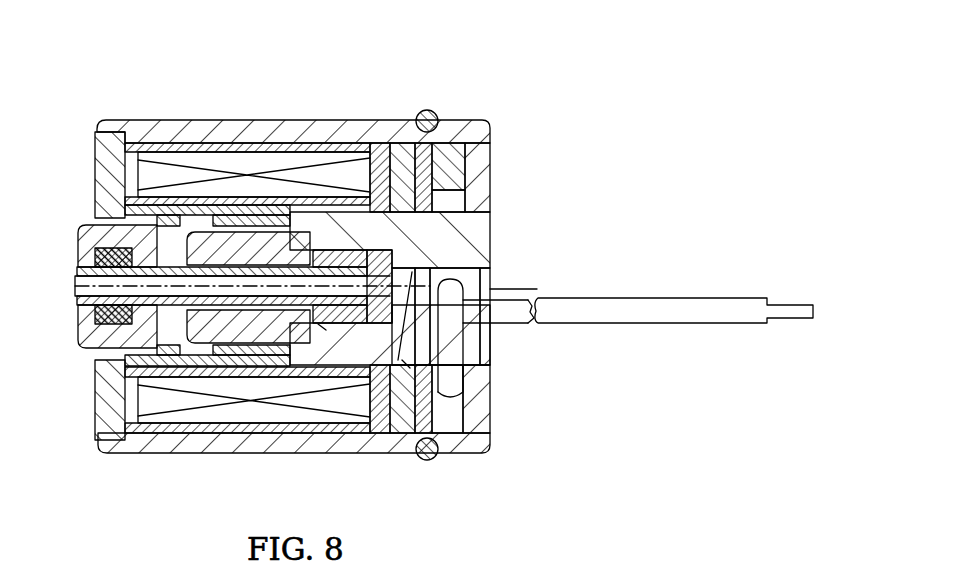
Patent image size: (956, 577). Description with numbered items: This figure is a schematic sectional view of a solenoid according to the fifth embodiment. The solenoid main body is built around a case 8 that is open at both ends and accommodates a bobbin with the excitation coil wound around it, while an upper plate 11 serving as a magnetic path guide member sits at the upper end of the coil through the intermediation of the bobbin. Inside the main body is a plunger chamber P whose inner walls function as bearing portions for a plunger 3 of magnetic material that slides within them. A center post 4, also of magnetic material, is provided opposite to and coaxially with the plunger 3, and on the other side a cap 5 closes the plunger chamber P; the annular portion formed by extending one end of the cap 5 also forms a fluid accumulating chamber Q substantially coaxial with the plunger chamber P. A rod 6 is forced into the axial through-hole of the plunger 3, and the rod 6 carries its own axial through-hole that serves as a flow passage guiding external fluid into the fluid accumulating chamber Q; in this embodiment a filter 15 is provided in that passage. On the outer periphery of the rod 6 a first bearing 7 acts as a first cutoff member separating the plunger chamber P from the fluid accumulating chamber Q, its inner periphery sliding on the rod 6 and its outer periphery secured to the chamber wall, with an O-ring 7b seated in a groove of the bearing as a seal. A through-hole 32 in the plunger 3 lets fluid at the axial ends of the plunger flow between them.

The upper plate 11 is at (95, 153).
The case 8 is at (213, 121).
The plunger 3 is at (278, 231).
The center post 4 is at (92, 228).
The rod 6 is at (76, 285).
The O-ring 7b is at (92, 327).
The cap 5 is at (482, 249).
The filter 15 is at (490, 349).
The through-hole 32 is at (253, 325).
The first bearing 7 is at (341, 325).
The plunger chamber P is at (322, 327).
The fluid accumulating chamber Q is at (406, 365).